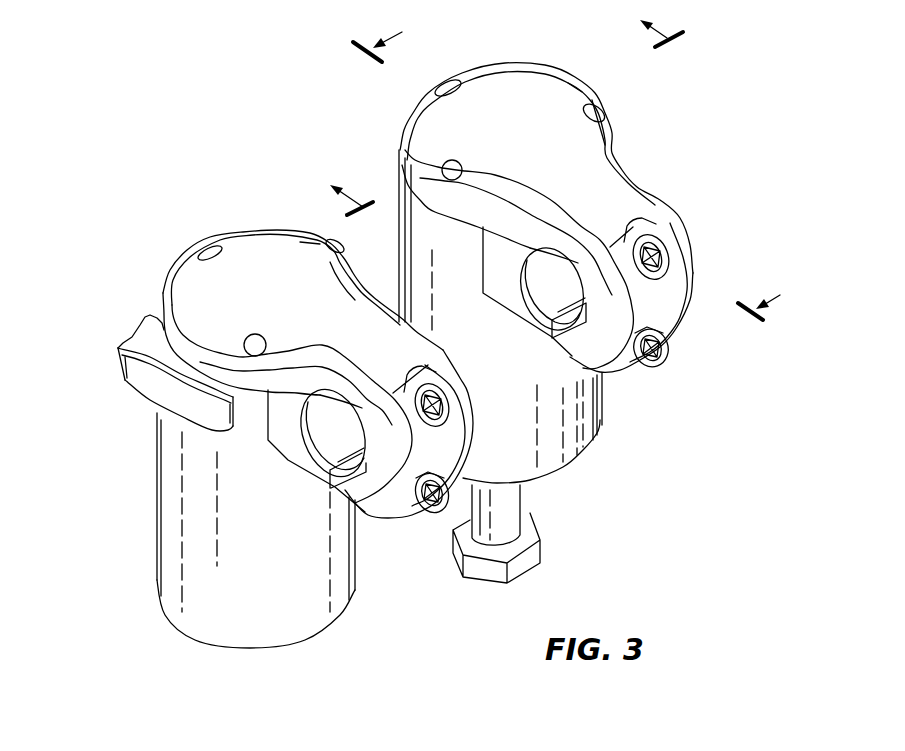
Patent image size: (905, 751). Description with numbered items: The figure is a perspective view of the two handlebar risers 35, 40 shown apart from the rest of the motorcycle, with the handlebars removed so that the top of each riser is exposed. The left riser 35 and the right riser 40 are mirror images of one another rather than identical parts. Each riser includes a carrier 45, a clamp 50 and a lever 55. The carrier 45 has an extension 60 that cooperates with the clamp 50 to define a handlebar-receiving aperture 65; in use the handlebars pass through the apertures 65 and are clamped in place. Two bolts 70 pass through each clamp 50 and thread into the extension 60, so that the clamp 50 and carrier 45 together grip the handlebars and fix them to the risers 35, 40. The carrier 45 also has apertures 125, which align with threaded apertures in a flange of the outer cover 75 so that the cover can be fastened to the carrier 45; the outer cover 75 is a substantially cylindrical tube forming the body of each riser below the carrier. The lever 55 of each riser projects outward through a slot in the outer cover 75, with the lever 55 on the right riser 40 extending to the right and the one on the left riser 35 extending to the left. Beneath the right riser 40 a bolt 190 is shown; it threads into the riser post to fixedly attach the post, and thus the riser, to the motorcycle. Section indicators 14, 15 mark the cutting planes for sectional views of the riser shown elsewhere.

The left riser 35 is at (100, 270).
The right riser 40 is at (715, 77).
The carrier 45 is at (280, 243).
The apertures 125 is at (226, 248).
The clamp 50 is at (447, 450).
The handlebar-receiving aperture 65 is at (330, 460).
The extension 60 is at (300, 458).
The bolts 70 is at (423, 372).
The outer cover 75 is at (200, 617).
The lever 55 is at (135, 380).
The bolt 190 is at (503, 527).
The section line 14 is at (494, 107).
The section line 15 is at (581, 169).